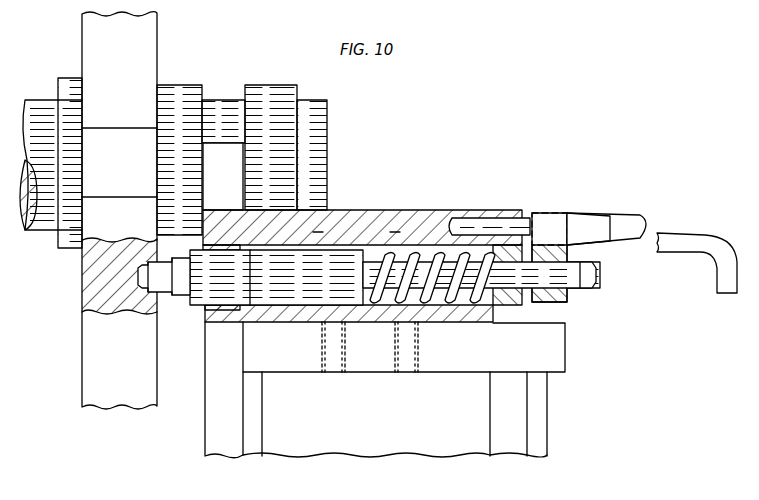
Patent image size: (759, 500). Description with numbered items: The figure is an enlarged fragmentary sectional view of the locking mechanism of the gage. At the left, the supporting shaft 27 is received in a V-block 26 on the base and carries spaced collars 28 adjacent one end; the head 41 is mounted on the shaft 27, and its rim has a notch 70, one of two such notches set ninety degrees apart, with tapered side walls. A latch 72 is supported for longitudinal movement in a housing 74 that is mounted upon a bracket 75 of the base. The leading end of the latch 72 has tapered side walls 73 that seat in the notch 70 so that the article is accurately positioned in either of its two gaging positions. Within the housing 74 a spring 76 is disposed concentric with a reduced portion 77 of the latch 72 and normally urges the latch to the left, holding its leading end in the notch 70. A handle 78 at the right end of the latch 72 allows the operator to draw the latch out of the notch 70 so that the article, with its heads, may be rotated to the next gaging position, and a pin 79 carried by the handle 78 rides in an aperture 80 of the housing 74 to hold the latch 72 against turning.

The head 41 is at (88, 62).
The supporting shaft 27 is at (40, 108).
The collars 28 is at (250, 95).
The V-block 26 is at (232, 156).
The aperture 80 is at (456, 216).
The pin 79 is at (506, 220).
The handle 78 is at (667, 250).
The notch 70 is at (140, 298).
The side walls 73 is at (175, 284).
The latch 72 is at (200, 288).
The housing 74 is at (278, 313).
The spring 76 is at (430, 293).
The reduced portion 77 is at (465, 280).
The bracket 75 is at (555, 342).